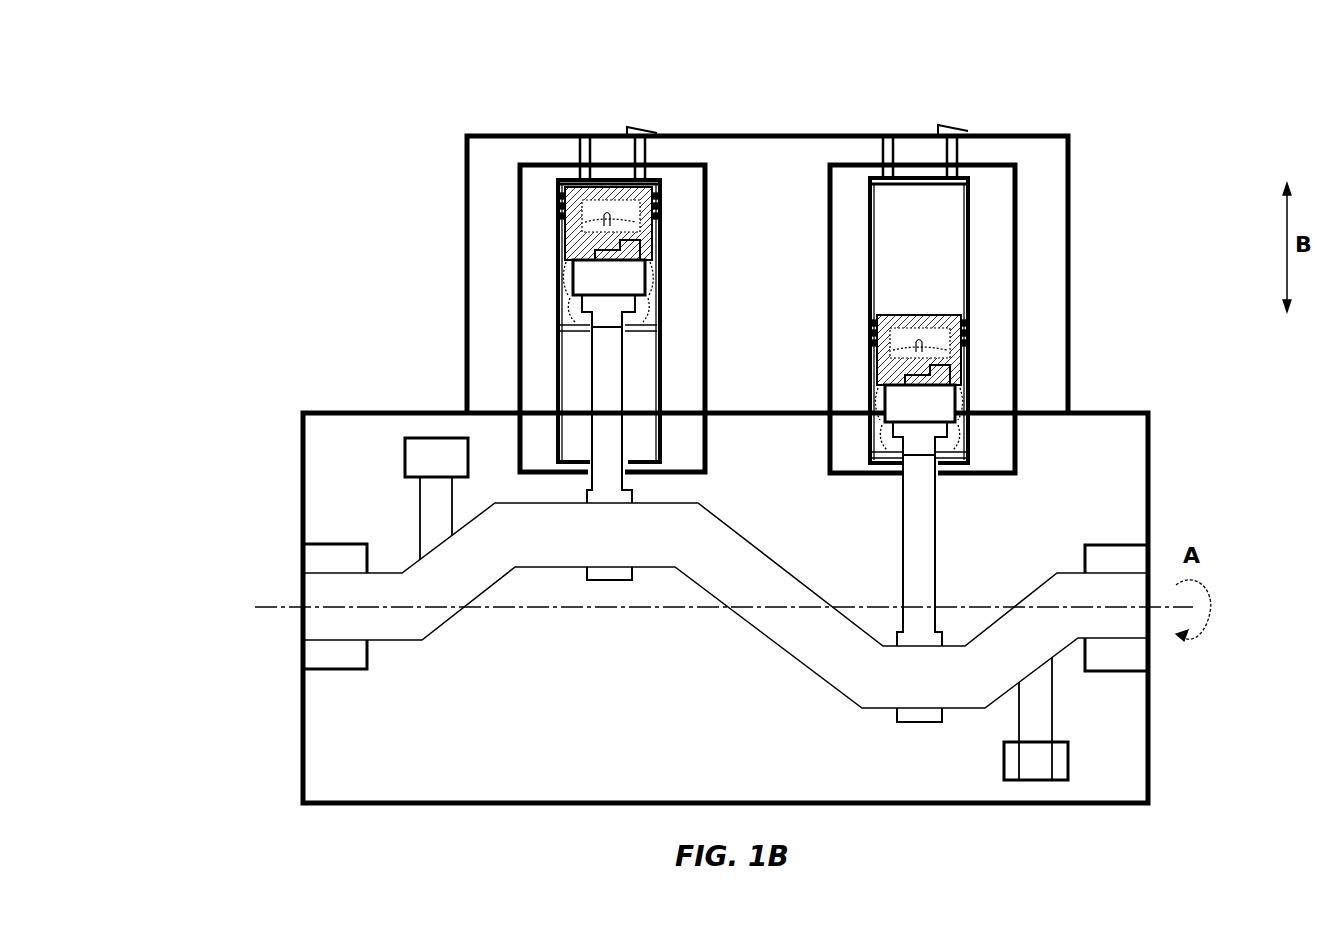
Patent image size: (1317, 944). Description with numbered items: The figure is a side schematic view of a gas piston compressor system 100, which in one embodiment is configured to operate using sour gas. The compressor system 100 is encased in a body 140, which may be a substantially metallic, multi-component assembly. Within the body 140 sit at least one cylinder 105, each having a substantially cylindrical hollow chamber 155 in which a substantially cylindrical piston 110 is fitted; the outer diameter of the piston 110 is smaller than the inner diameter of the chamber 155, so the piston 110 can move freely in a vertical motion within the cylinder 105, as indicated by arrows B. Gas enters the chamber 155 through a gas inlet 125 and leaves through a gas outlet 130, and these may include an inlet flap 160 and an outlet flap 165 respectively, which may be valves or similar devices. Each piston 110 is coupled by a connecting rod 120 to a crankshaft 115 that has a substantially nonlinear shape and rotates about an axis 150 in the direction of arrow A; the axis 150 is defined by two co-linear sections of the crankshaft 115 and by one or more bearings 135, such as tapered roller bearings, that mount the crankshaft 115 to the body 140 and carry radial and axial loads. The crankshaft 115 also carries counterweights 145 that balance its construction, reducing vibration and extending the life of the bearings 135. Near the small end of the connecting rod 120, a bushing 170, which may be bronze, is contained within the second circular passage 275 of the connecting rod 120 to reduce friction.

The gas piston compressor system 100 is at (275, 160).
The cylinder 105 is at (1035, 188).
The piston 110 is at (968, 363).
The crankshaft 115 is at (412, 627).
The connecting rod 120 is at (937, 530).
The gas inlet 125 is at (883, 157).
The gas outlet 130 is at (955, 160).
The bearings 135 is at (320, 555).
The body 140 is at (465, 322).
The counterweights 145 is at (428, 450).
The axis 150 is at (283, 612).
The chamber 155 is at (950, 233).
The inlet flap 160 is at (903, 185).
The outlet flap 165 is at (950, 125).
The bushing 170 is at (562, 257).
The second circular passage 275 is at (562, 246).